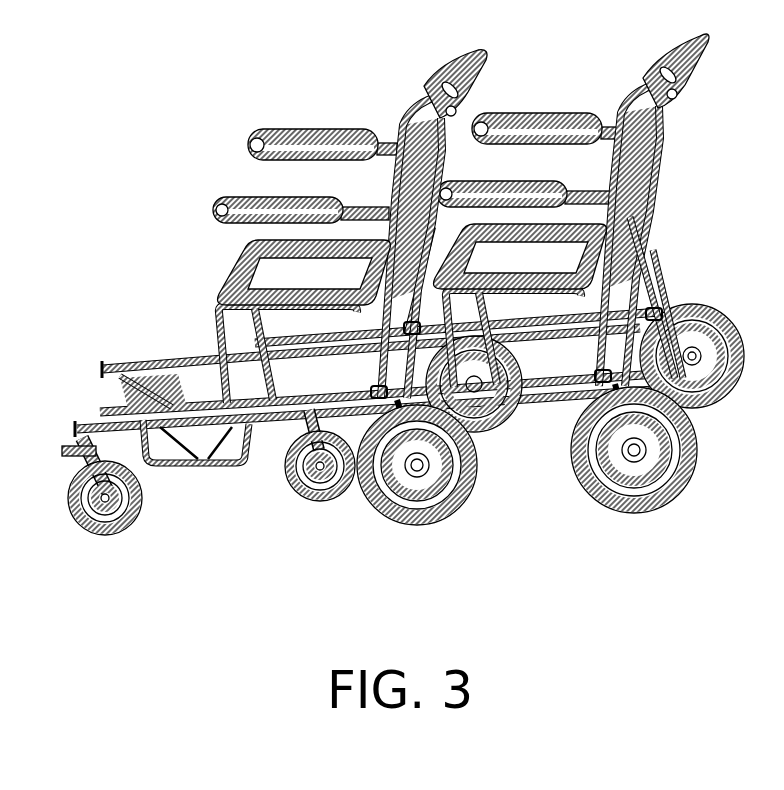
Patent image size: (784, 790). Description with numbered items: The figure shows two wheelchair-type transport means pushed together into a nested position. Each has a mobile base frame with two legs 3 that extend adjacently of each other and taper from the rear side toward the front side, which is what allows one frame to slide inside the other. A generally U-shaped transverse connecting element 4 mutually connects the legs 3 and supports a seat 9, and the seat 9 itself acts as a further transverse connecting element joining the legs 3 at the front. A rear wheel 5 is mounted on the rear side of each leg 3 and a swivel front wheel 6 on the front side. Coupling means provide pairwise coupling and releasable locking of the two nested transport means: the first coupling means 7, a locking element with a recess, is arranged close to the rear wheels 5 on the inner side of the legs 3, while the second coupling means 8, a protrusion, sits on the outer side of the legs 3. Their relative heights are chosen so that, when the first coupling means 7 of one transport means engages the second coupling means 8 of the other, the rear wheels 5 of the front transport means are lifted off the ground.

The legs 3 is at (272, 405).
The transverse connecting element 4 is at (640, 262).
The rear wheel 5 is at (450, 512).
The front wheel 6 is at (120, 520).
The first coupling means 7 is at (412, 330).
The second coupling means 8 is at (163, 421).
The seat 9 is at (305, 272).